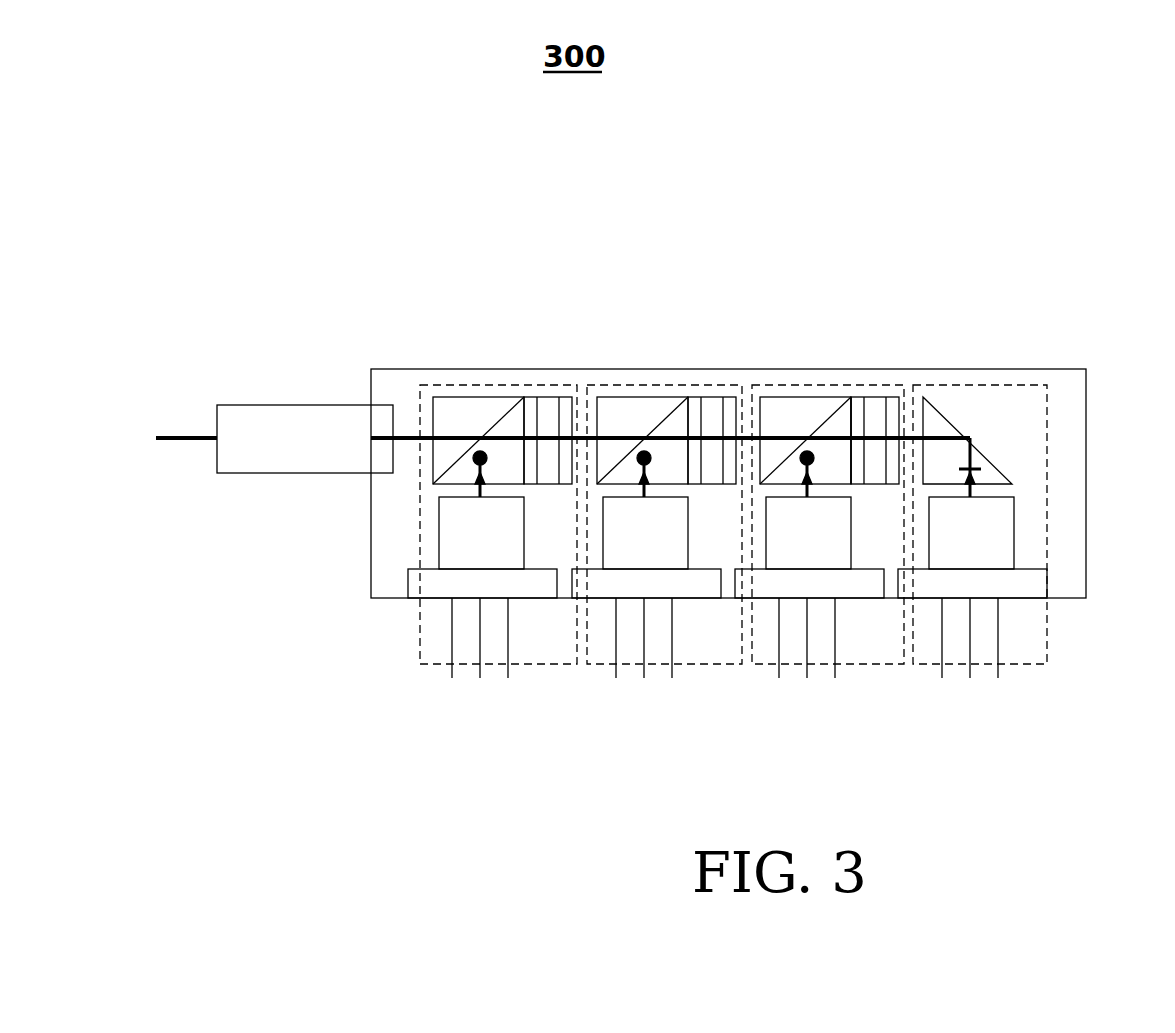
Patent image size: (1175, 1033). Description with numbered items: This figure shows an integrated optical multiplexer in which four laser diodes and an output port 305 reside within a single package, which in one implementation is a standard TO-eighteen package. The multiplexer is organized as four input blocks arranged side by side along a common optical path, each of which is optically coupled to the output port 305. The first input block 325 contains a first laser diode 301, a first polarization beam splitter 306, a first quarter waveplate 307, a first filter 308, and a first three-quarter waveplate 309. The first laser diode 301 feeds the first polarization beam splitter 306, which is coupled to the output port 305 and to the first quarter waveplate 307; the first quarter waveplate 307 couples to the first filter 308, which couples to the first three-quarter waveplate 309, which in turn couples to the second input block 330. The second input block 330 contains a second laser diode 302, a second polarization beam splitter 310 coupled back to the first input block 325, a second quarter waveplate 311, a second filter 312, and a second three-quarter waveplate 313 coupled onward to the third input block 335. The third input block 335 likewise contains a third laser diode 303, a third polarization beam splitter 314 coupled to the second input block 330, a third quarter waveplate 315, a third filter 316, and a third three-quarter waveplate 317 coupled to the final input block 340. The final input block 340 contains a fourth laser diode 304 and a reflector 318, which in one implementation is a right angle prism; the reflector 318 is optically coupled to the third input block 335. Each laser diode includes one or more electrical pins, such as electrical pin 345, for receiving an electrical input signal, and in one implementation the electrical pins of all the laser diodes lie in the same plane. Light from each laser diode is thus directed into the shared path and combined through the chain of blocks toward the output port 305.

The first laser diode 301 is at (478, 496).
The second laser diode 302 is at (654, 416).
The third laser diode 303 is at (848, 458).
The fourth laser diode 304 is at (955, 477).
The output port 305 is at (317, 402).
The first polarization beam splitter 306 is at (460, 398).
The first quarter waveplate 307 is at (527, 397).
The first filter 308 is at (553, 395).
The first three-quarter waveplate 309 is at (572, 392).
The second polarization beam splitter 310 is at (637, 387).
The second quarter waveplate 311 is at (688, 395).
The second filter 312 is at (718, 395).
The second three-quarter waveplate 313 is at (737, 395).
The third polarization beam splitter 314 is at (788, 395).
The third quarter waveplate 315 is at (856, 393).
The third filter 316 is at (883, 387).
The third three-quarter waveplate 317 is at (902, 397).
The reflector 318 is at (952, 425).
The first input block 325 is at (503, 682).
The second input block 330 is at (625, 667).
The third input block 335 is at (795, 665).
The final input block 340 is at (1052, 647).
The electrical pin 345 is at (450, 623).